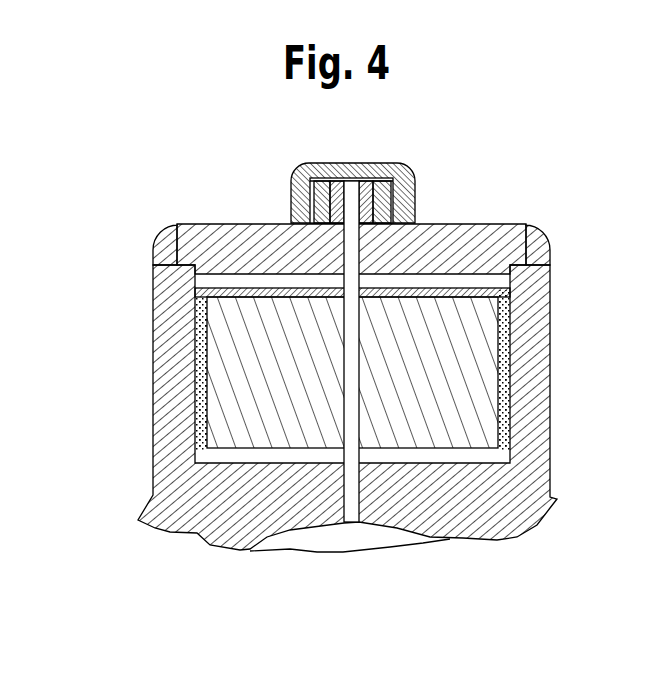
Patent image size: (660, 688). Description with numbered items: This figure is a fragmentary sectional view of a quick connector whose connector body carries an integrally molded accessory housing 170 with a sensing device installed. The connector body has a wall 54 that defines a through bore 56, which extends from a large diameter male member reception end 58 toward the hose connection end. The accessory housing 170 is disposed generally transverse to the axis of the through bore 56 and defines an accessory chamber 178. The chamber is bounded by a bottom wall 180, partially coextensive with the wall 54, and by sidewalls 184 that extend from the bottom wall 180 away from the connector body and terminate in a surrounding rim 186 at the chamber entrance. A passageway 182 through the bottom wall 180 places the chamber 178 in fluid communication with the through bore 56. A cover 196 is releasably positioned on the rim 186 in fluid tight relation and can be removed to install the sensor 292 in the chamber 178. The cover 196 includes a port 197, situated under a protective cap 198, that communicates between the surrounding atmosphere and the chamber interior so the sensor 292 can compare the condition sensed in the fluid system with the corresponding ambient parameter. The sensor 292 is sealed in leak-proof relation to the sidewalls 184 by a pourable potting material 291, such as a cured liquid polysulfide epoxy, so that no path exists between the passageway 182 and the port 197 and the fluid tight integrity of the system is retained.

The accessory housing 170 is at (148, 286).
The accessory chamber 178 is at (512, 420).
The bottom wall 180 is at (223, 498).
The passageway 182 is at (355, 507).
The sidewalls 184 is at (530, 363).
The rim 186 is at (178, 222).
The cover 196 is at (270, 223).
The port 197 is at (482, 250).
The protective cap 198 is at (336, 163).
The potting material 291 is at (200, 363).
The sensor 292 is at (497, 316).
The wall 54 is at (318, 538).
The through bore 56 is at (346, 566).
The male member reception end 58 is at (262, 550).